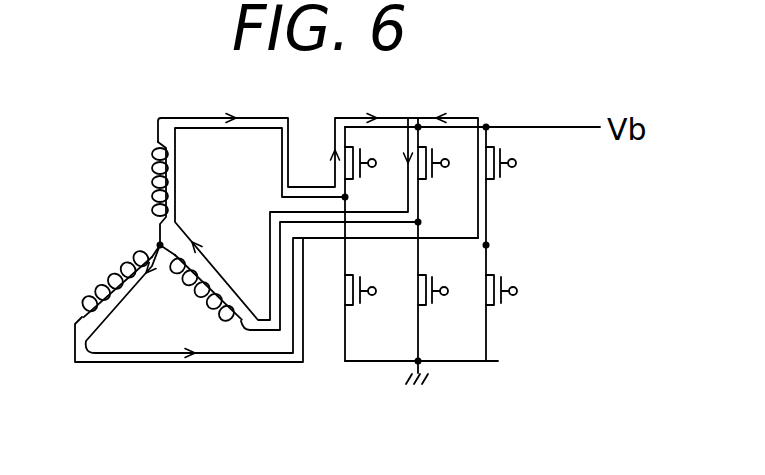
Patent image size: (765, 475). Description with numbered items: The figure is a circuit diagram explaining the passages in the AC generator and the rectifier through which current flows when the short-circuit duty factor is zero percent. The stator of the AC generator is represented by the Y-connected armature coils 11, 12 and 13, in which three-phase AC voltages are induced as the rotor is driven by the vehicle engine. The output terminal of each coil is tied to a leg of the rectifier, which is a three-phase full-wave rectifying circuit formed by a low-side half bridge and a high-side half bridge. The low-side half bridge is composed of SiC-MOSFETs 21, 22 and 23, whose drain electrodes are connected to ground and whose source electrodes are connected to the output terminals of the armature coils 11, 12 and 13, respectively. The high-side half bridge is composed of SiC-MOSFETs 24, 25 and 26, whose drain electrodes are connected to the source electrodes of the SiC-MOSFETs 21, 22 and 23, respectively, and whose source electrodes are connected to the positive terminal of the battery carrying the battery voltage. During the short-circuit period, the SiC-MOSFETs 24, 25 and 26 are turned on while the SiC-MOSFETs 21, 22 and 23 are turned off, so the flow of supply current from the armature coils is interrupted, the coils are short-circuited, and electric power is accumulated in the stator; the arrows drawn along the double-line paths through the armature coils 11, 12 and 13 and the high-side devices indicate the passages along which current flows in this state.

The armature coil 11 is at (142, 187).
The armature coil 12 is at (215, 314).
The armature coil 13 is at (118, 267).
The SiC-MOSFET 21 is at (360, 310).
The SiC-MOSFET 22 is at (432, 310).
The SiC-MOSFET 23 is at (500, 310).
The SiC-MOSFET 24 is at (360, 180).
The SiC-MOSFET 25 is at (432, 180).
The SiC-MOSFET 26 is at (500, 180).